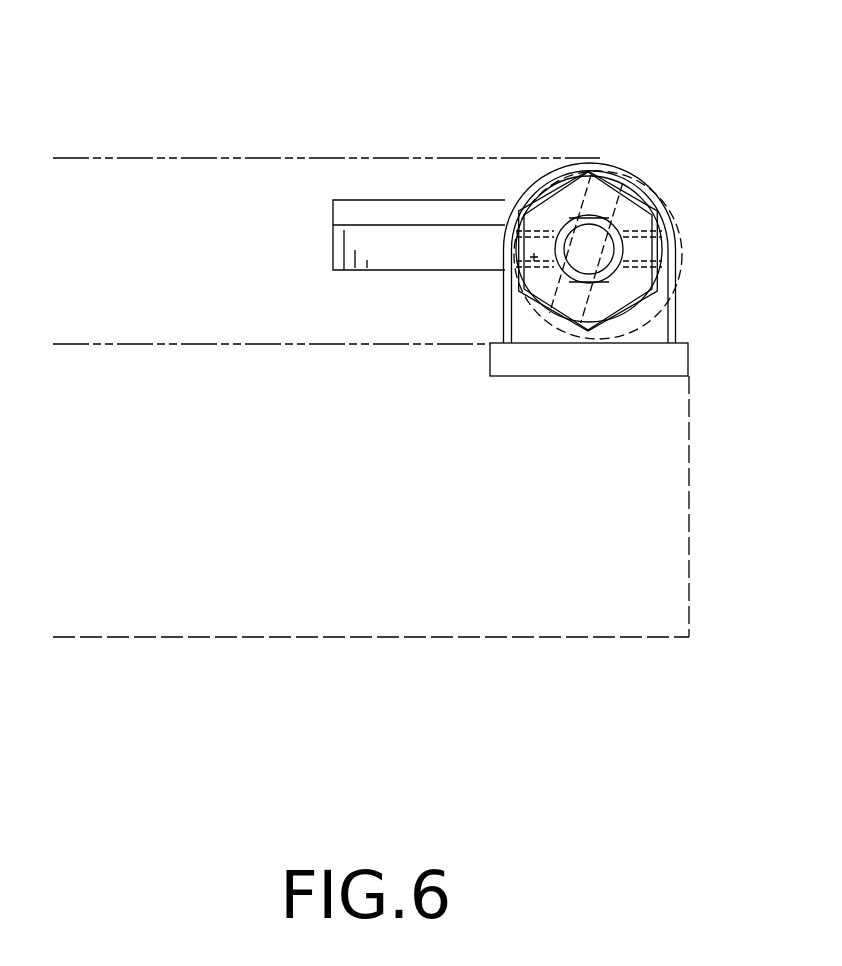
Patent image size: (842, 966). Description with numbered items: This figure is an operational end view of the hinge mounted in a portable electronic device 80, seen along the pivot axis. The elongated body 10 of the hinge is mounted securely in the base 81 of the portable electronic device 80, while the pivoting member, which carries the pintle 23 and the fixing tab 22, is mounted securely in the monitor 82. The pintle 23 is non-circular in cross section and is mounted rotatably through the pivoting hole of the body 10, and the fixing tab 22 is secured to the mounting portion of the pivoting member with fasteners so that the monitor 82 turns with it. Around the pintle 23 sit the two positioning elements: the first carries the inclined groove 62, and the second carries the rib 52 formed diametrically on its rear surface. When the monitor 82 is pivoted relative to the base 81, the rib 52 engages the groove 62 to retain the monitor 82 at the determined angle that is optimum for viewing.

The body 10 is at (653, 368).
The fixing tab 22 is at (404, 270).
The pintle 23 is at (600, 247).
The rib 52 is at (525, 280).
The groove 62 is at (613, 173).
The portable electronic device 80 is at (414, 118).
The base 81 is at (417, 624).
The monitor 82 is at (229, 175).